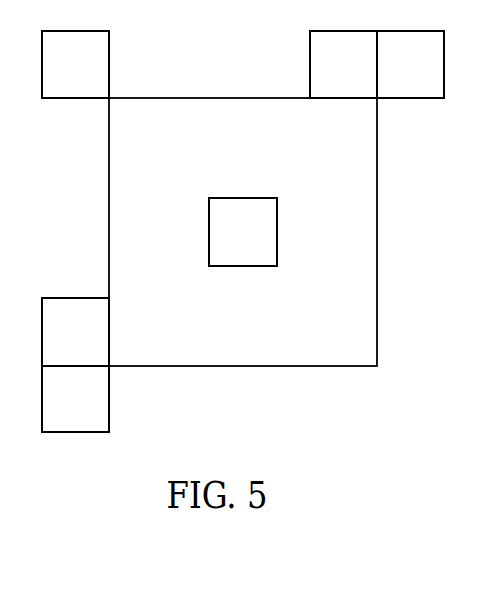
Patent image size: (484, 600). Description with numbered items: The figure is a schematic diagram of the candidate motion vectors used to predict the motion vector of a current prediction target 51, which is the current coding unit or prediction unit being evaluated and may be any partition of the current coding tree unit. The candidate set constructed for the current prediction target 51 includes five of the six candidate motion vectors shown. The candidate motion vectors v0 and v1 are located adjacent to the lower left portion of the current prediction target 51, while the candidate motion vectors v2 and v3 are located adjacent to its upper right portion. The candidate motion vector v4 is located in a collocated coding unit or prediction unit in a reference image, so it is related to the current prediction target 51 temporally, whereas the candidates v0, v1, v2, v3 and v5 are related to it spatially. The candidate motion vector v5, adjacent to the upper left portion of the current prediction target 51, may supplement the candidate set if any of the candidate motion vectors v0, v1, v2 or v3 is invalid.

The current prediction target 51 is at (377, 232).
The candidate motion vector v0 is at (75, 332).
The candidate motion vector v1 is at (75, 399).
The candidate motion vector v2 is at (343, 64).
The candidate motion vector v3 is at (410, 64).
The candidate motion vector v4 is at (243, 232).
The candidate motion vector v5 is at (75, 64).